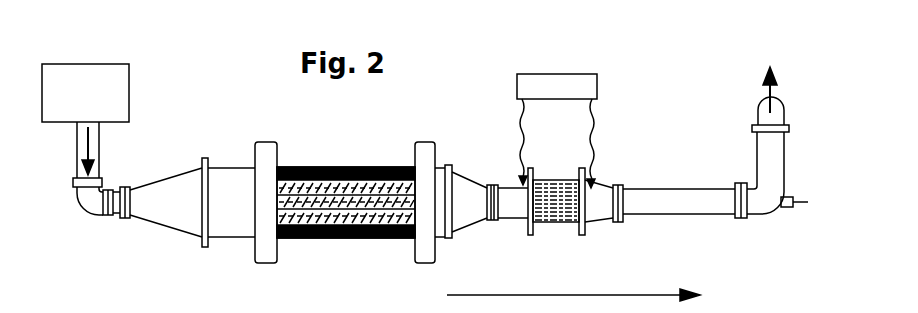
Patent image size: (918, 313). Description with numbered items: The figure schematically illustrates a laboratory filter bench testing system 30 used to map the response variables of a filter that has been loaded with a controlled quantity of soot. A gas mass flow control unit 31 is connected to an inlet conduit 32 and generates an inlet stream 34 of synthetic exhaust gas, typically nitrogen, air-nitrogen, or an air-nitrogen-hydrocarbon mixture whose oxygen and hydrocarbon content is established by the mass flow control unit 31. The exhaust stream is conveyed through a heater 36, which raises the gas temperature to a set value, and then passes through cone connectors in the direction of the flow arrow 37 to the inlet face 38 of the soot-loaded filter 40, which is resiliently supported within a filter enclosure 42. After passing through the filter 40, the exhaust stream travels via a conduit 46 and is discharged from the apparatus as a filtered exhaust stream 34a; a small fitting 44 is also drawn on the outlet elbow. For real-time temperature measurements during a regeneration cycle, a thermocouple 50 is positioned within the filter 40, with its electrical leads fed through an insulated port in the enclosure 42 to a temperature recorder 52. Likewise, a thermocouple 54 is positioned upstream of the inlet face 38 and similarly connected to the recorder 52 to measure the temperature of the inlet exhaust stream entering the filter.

The testing system 30 is at (212, 82).
The gas mass flow control unit 31 is at (85, 93).
The inlet conduit 32 is at (82, 207).
The inlet stream 34 is at (85, 157).
The filtered exhaust stream 34a is at (768, 92).
The heater 36 is at (337, 167).
The flow arrow 37 is at (668, 293).
The inlet face 38 is at (548, 227).
The soot-loaded filter 40 is at (559, 224).
The filter enclosure 42 is at (573, 227).
The drain outlet 44 is at (789, 207).
The conduit 46 is at (722, 187).
The thermocouple 50 is at (557, 192).
The temperature recorder 52 is at (557, 131).
The thermocouple 54 is at (522, 192).